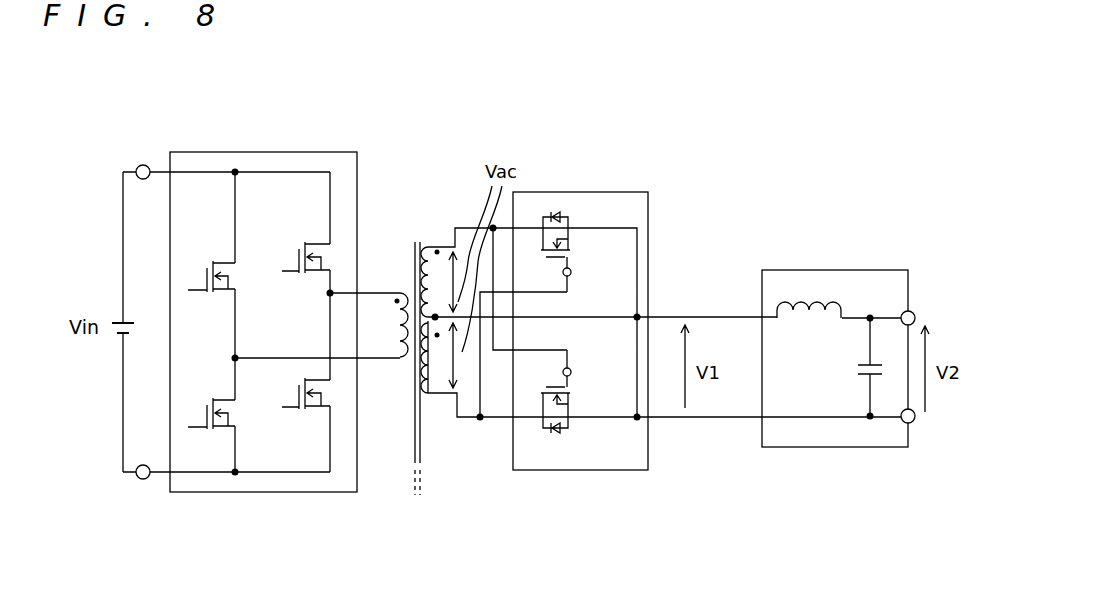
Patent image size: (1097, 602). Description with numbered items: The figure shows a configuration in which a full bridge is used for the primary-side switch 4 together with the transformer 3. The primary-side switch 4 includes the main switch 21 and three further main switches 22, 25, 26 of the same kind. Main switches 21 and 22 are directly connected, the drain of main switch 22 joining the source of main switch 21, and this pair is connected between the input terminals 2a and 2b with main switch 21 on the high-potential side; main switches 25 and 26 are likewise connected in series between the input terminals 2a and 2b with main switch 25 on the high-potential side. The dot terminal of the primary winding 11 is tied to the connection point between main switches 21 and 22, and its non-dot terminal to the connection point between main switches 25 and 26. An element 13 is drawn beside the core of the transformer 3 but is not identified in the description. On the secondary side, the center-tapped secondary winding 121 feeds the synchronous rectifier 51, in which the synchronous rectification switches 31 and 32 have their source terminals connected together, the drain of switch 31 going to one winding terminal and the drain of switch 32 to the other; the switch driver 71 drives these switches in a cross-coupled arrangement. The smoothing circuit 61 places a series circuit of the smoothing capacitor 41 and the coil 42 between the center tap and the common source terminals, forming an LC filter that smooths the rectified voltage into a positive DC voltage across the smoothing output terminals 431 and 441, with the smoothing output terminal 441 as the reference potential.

The input terminal 2a is at (143, 164).
The input terminal 2b is at (143, 480).
The primary-side switch 4 is at (293, 143).
The main switch 21 is at (318, 242).
The main switch 22 is at (318, 410).
The main switch 25 is at (225, 261).
The main switch 26 is at (226, 398).
The primary winding 11 is at (397, 291).
The transformer 3 is at (422, 222).
The core leg / shield 13 is at (412, 450).
The secondary winding 121 is at (446, 262).
The switch driver 71 is at (432, 246).
The synchronous rectifier 51 is at (599, 171).
The synchronous rectification switch 31 is at (571, 240).
The synchronous rectification switch 32 is at (571, 398).
The smoothing circuit 61 is at (847, 264).
The smoothing capacitor 41 is at (867, 363).
The coil 42 is at (795, 308).
The smoothing output terminal 431 is at (913, 310).
The smoothing output terminal 441 is at (913, 424).